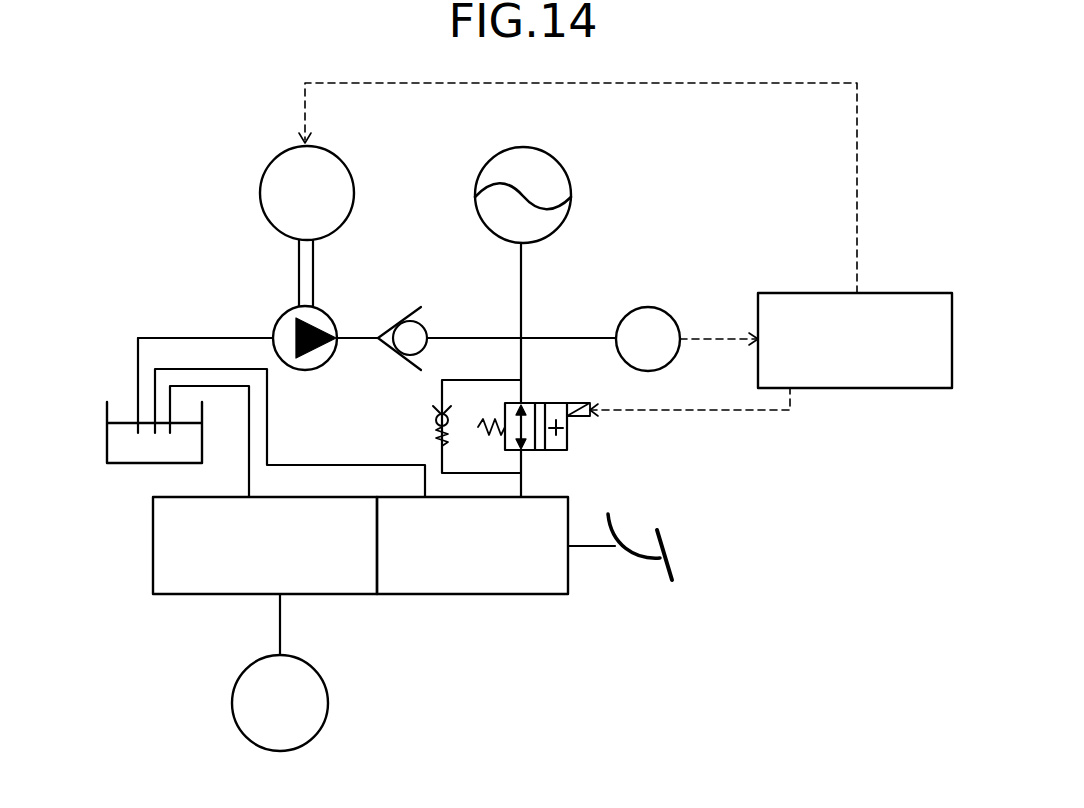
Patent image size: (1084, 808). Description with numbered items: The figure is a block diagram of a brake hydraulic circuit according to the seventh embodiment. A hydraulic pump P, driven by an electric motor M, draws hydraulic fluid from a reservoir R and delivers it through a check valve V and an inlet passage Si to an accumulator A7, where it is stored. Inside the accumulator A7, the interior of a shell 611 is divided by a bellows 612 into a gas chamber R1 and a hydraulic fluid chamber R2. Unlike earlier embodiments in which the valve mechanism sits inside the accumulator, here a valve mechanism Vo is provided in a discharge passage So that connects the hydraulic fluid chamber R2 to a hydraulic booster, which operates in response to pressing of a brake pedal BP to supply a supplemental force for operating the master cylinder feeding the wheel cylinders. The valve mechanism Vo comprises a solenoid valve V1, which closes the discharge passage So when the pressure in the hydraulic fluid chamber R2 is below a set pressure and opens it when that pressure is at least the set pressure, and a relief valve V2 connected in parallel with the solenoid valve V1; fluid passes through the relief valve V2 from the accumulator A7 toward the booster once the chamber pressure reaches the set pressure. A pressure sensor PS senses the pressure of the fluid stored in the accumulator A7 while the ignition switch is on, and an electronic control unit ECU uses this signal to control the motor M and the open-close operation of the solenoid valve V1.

The electric motor M is at (258, 188).
The accumulator A7 is at (550, 155).
The bellows 612 is at (533, 200).
The shell 611 is at (482, 217).
The gas chamber R1 is at (490, 173).
The hydraulic fluid chamber R2 is at (550, 223).
The inlet passage Si is at (472, 336).
The discharge passage So is at (522, 372).
The hydraulic pump P is at (302, 372).
The check valve V is at (402, 350).
The relief valve V2 is at (432, 432).
The solenoid valve V1 is at (568, 431).
The valve mechanism Vo is at (565, 473).
The pressure sensor PS is at (650, 307).
The electronic control unit ECU is at (838, 390).
The reservoir R is at (107, 437).
The brake pedal BP is at (668, 560).